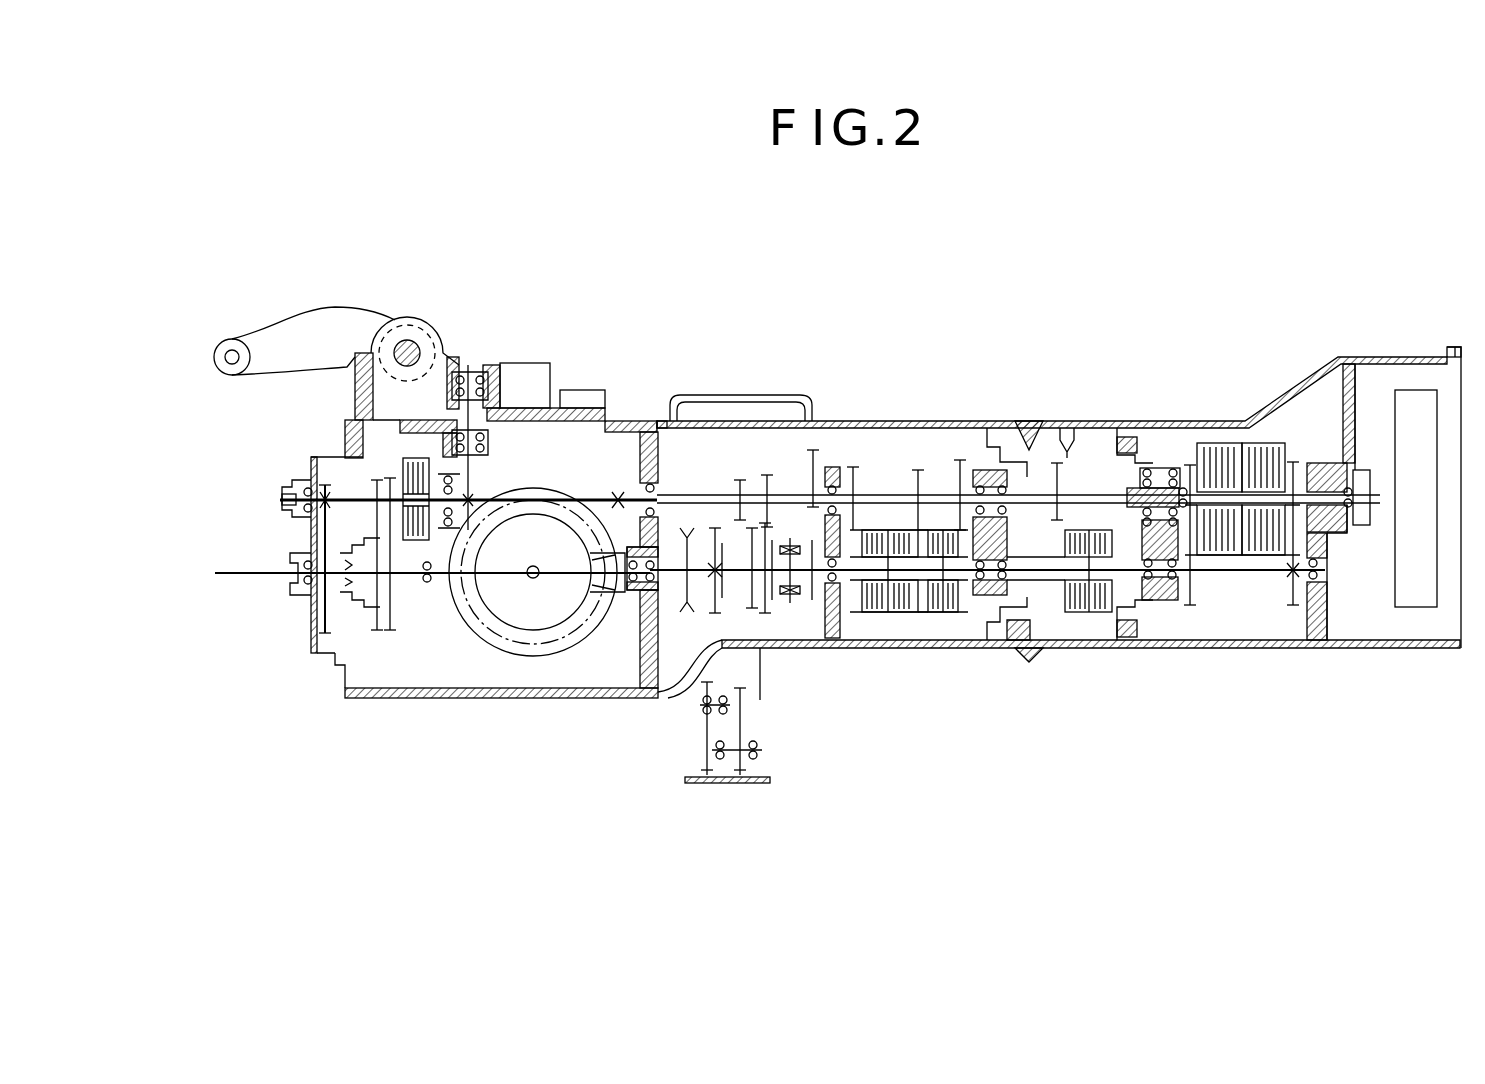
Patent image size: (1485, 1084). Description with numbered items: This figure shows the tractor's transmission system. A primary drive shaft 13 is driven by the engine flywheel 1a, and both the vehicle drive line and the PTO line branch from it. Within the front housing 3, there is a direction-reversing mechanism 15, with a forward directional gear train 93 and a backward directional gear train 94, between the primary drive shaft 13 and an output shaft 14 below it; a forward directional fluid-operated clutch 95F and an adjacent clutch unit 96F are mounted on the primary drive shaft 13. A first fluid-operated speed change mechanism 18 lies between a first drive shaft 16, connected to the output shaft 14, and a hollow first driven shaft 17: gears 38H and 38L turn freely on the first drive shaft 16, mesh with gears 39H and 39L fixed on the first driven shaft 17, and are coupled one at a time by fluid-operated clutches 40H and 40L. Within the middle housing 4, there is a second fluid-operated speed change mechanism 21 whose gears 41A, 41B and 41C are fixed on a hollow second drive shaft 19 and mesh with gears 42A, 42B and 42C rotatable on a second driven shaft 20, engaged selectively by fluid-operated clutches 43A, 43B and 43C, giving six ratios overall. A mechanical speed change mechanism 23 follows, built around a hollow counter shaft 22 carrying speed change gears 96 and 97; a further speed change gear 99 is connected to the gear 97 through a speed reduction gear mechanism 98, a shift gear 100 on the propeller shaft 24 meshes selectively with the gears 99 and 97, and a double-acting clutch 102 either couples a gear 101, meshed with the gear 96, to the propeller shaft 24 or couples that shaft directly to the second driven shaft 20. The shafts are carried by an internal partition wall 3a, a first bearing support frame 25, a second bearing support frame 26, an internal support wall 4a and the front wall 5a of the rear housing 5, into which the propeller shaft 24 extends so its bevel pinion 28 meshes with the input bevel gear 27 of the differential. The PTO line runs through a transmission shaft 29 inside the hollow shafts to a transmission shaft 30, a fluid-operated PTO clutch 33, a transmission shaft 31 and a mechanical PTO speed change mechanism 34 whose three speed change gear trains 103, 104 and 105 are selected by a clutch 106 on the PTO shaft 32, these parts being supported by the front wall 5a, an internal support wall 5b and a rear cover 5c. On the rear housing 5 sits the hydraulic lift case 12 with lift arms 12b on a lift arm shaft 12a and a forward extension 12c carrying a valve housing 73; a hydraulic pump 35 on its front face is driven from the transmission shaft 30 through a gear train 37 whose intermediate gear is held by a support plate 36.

The engine flywheel 1a is at (1415, 607).
The front housing 3 is at (1223, 650).
The internal partition wall 3a is at (1353, 418).
The middle housing 4 is at (902, 650).
The internal support wall 4a is at (833, 467).
The rear housing 5 is at (483, 698).
The front wall 5a is at (657, 427).
The internal support wall 5b is at (477, 568).
The rear cover 5c is at (310, 622).
The hydraulic lift case 12 is at (410, 318).
The lift arm shaft 12a is at (416, 354).
The lift arms 12b is at (288, 345).
The forward extension 12c is at (610, 421).
The primary drive shaft 13 is at (1311, 462).
The output shaft 14 is at (1256, 560).
The direction-reversing mechanism 15 is at (1243, 585).
The first drive shaft 16 is at (1030, 572).
The first driven shaft 17 is at (1085, 505).
The first fluid-operated speed change mechanism 18 is at (1057, 463).
The second drive shaft 19 is at (881, 490).
The second driven shaft 20 is at (828, 640).
The second fluid-operated speed change mechanism 21 is at (938, 442).
The counter shaft 22 is at (754, 535).
The mechanical speed change mechanism 23 is at (800, 455).
The propeller shaft 24 is at (667, 665).
The first bearing support frame 25 is at (1165, 468).
The second bearing support frame 26 is at (961, 458).
The input bevel gear 27 is at (540, 647).
The bevel pinion 28 is at (568, 650).
The transmission shaft 29 is at (1023, 520).
The transmission shaft 30 is at (595, 492).
The transmission shaft 31 is at (355, 533).
The PTO shaft 32 is at (242, 578).
The fluid-operated PTO clutch 33 is at (408, 565).
The mechanical PTO speed change mechanism 34 is at (311, 457).
The hydraulic pump 35 is at (525, 370).
The support plate 36 is at (442, 420).
The gear train 37 is at (484, 440).
The gear 38H is at (1041, 645).
The gear 38L is at (1125, 632).
The gear 39H is at (1068, 443).
The gear 39L is at (1116, 505).
The fluid-operated clutch 40H is at (1080, 615).
The fluid-operated clutch 40L is at (1067, 615).
The gear 41A is at (918, 470).
The gear 41B is at (853, 467).
The gear 41C is at (999, 421).
The gear 42A is at (917, 615).
The gear 42B is at (855, 615).
The gear 42C is at (962, 615).
The fluid-operated clutch 43A is at (880, 615).
The fluid-operated clutch 43B is at (877, 615).
The fluid-operated clutch 43C is at (952, 615).
The valve housing 73 is at (576, 395).
The forward directional gear train 93 is at (1296, 620).
The backward directional gear train 94 is at (1188, 622).
The forward directional fluid-operated clutch 95F is at (1260, 443).
The speed change gear 96 is at (767, 475).
The clutch pack 96F is at (1220, 443).
The speed change gear 97 is at (740, 480).
The speed reduction gear mechanism 98 is at (680, 775).
The speed change gear 99 is at (718, 702).
The shift gear 100 is at (715, 525).
The gear 101 is at (765, 648).
The double-acting clutch 102 is at (790, 582).
The speed change gear train 103 is at (317, 657).
The speed change gear train 104 is at (380, 640).
The speed change gear train 105 is at (397, 640).
The clutch 106 is at (343, 592).